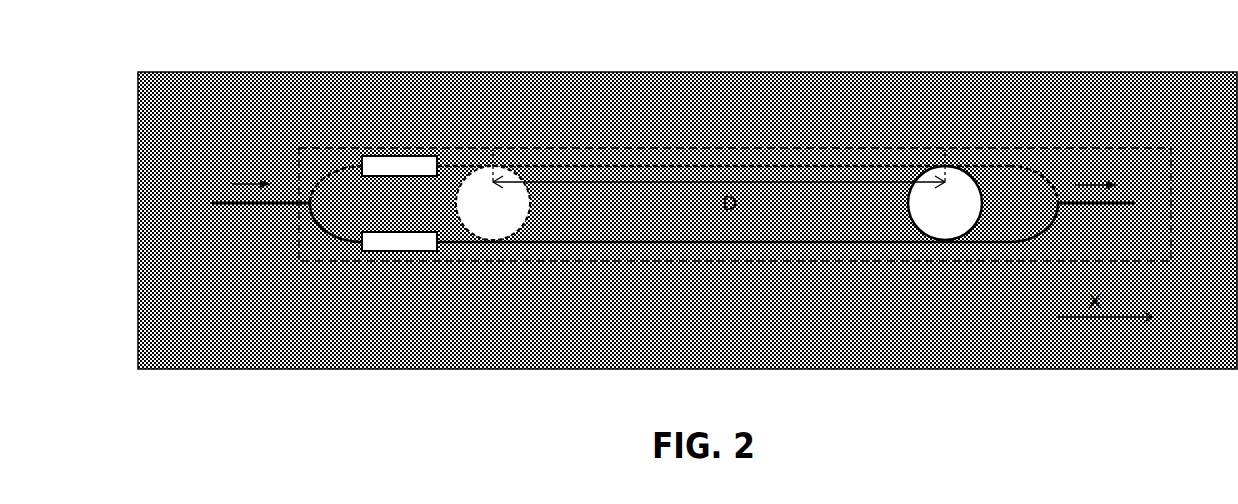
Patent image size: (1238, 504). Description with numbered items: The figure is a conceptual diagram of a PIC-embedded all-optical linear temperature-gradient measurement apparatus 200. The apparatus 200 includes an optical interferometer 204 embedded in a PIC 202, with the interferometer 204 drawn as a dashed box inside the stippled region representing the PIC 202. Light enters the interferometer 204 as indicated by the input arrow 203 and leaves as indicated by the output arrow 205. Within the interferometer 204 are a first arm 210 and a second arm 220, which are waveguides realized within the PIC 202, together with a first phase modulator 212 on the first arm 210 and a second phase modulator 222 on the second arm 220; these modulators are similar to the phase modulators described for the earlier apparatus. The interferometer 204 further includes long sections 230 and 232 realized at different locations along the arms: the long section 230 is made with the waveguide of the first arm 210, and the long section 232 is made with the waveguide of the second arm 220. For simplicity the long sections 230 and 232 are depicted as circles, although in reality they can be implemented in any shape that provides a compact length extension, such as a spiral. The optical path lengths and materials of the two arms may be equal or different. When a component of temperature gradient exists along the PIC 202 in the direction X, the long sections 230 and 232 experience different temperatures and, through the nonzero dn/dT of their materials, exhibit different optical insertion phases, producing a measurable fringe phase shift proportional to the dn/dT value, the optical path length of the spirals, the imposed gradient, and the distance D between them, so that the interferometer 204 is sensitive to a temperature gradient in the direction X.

The PIC-embedded all-optical linear temperature-gradient measurement apparatus 200 is at (95, 64).
The PIC 202 is at (210, 346).
The input light 203 is at (243, 171).
The optical interferometer 204 is at (1171, 185).
The output light 205 is at (1095, 172).
The first arm 210 is at (733, 167).
The first phase modulator 212 is at (418, 156).
The second arm 220 is at (738, 244).
The second phase modulator 222 is at (420, 252).
The long section 230 is at (512, 215).
The long section 232 is at (963, 215).